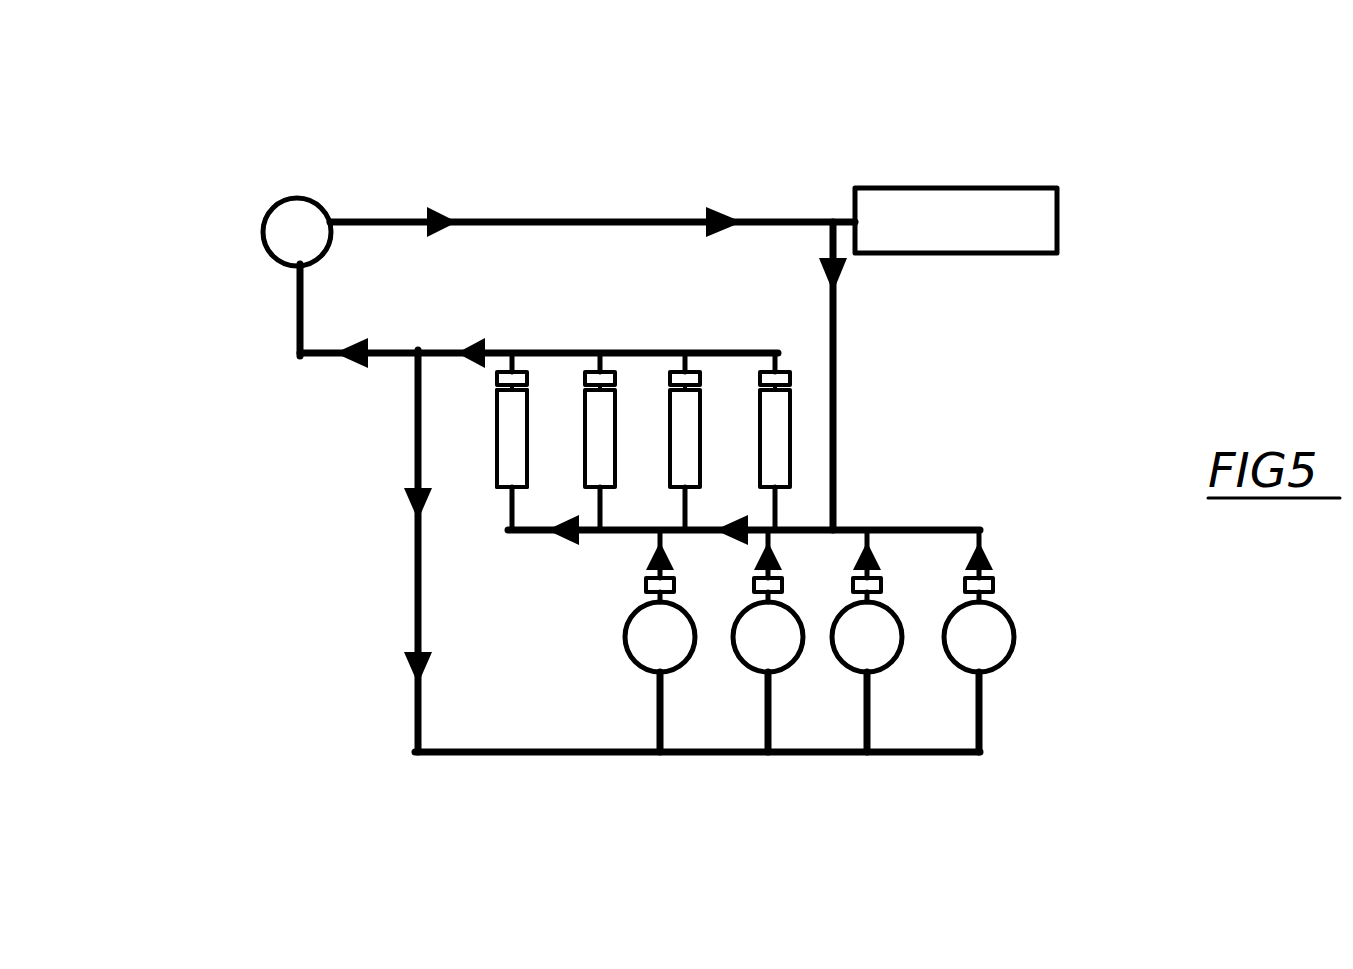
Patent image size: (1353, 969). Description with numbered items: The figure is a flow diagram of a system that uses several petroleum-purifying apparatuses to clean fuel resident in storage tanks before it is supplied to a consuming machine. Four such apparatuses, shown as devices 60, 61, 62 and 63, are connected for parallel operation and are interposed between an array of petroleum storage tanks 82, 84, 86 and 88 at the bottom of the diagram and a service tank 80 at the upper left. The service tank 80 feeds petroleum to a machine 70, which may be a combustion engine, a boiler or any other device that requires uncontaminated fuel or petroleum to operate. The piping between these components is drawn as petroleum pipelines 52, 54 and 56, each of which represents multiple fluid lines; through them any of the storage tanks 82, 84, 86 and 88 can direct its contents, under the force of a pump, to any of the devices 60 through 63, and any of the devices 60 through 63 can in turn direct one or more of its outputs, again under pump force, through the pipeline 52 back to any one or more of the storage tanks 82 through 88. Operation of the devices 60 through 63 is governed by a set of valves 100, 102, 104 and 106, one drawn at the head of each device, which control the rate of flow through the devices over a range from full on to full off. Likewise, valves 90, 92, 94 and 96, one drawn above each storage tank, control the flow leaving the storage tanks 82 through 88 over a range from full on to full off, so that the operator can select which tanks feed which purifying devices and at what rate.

The petroleum pipeline 52 is at (473, 757).
The petroleum pipeline 54 is at (937, 530).
The petroleum pipeline 56 is at (397, 350).
The device 60 is at (790, 432).
The device 61 is at (700, 440).
The device 62 is at (618, 460).
The device 63 is at (497, 458).
The machine 70 is at (1037, 185).
The service tank 80 is at (297, 198).
The petroleum storage tank 82 is at (1003, 663).
The petroleum storage tank 84 is at (887, 666).
The petroleum storage tank 86 is at (787, 665).
The petroleum storage tank 88 is at (678, 664).
The valve 90 is at (993, 585).
The valve 92 is at (882, 585).
The valve 94 is at (753, 585).
The valve 96 is at (645, 590).
The valve 100 is at (500, 377).
The valve 102 is at (500, 410).
The valve 104 is at (660, 373).
The valve 106 is at (757, 377).